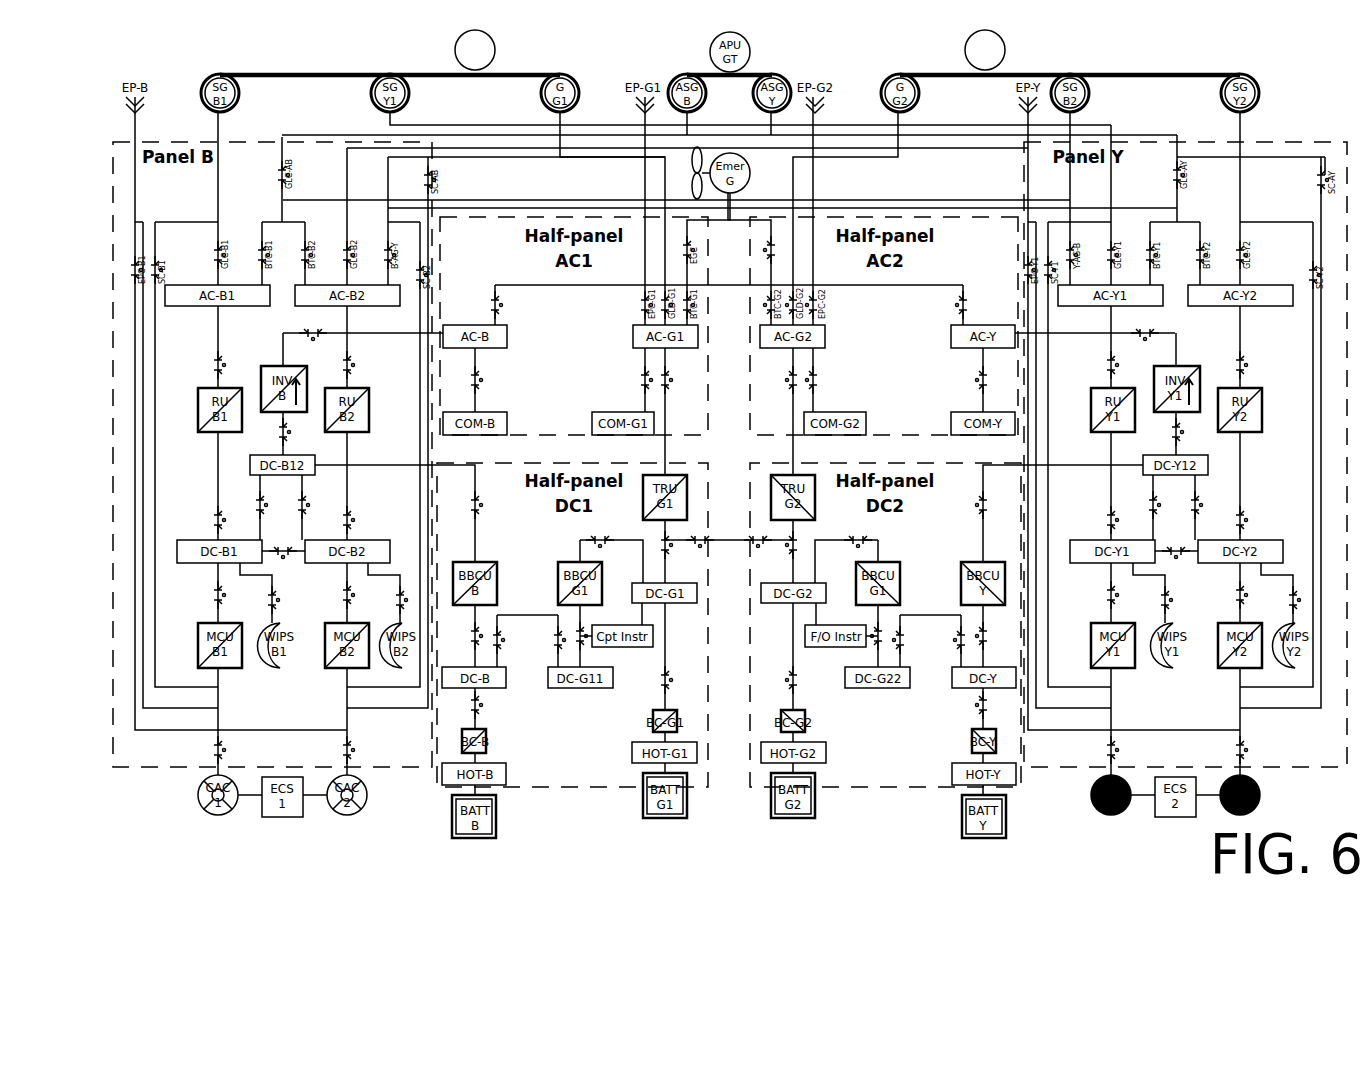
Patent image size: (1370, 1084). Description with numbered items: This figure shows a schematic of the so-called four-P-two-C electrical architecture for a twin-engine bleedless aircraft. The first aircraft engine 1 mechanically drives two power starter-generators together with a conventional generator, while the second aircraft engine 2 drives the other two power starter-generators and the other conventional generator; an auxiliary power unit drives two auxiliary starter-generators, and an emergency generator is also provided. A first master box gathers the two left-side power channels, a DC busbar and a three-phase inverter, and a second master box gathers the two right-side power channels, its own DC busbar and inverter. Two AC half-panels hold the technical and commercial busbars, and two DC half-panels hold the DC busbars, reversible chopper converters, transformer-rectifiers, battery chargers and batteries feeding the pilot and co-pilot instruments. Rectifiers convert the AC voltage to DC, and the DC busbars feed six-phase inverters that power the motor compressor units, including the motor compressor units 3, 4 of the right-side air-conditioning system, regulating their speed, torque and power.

The aircraft engine Eng- 1 is at (475, 50).
The aircraft engine Eng- 2 is at (985, 50).
The motor compressor unit CAC3 3 is at (1111, 795).
The motor compressor unit CAC4 4 is at (1240, 795).